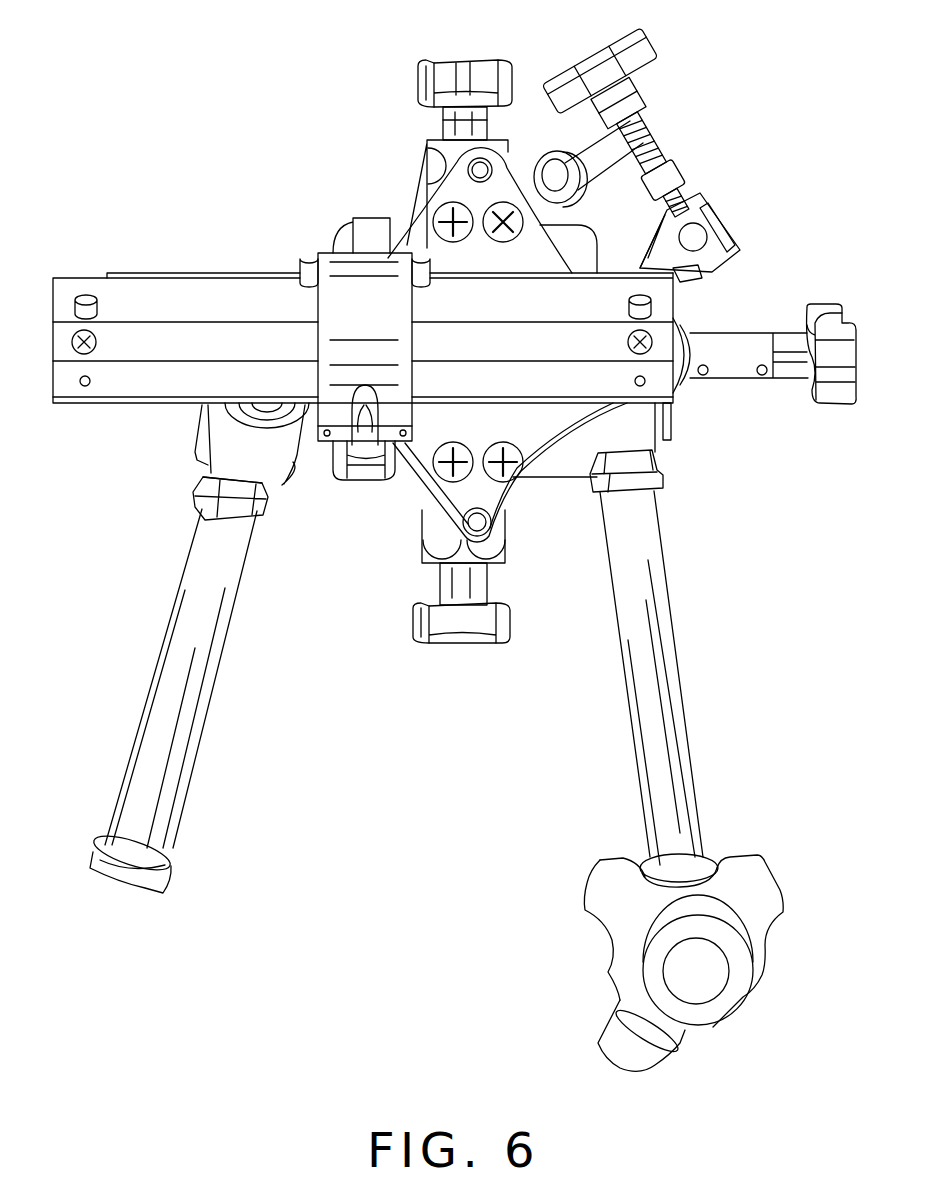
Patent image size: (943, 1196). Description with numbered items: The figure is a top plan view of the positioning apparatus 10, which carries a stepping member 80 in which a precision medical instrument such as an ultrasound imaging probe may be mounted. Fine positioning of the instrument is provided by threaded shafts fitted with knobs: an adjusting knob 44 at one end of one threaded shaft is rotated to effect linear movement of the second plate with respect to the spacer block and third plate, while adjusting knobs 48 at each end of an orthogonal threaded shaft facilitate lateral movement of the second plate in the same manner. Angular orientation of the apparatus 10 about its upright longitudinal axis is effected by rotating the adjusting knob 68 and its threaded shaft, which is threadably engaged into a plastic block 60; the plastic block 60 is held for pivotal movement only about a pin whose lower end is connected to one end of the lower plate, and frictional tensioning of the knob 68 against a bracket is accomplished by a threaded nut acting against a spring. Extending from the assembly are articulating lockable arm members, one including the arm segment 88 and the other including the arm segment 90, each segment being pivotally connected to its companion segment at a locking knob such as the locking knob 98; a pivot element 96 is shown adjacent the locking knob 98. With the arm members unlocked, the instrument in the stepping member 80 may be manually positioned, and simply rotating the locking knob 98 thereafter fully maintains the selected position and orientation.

The apparatus 10 is at (770, 138).
The adjusting knob 44 is at (836, 404).
The adjusting knobs 48 is at (460, 66).
The plastic block 60 is at (718, 226).
The adjusting knob 68 is at (652, 48).
The stepping member 80 is at (148, 258).
The arm segment 88 is at (682, 660).
The arm segment 90 is at (185, 768).
The pivot ring 96 is at (648, 932).
The locking knob 98 is at (588, 883).